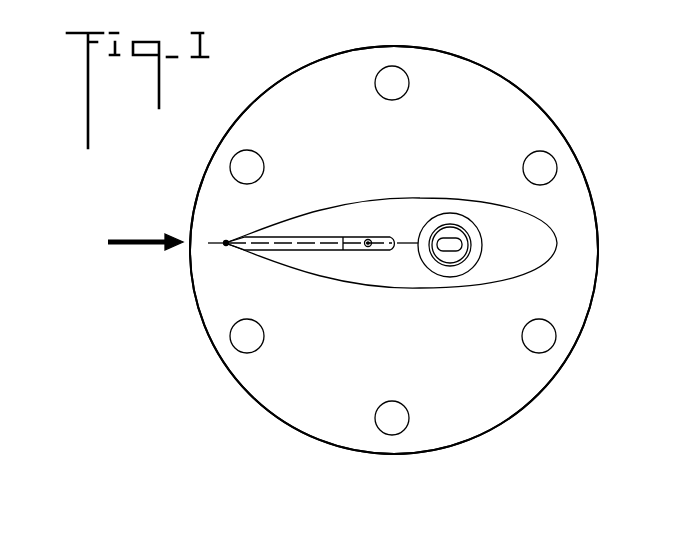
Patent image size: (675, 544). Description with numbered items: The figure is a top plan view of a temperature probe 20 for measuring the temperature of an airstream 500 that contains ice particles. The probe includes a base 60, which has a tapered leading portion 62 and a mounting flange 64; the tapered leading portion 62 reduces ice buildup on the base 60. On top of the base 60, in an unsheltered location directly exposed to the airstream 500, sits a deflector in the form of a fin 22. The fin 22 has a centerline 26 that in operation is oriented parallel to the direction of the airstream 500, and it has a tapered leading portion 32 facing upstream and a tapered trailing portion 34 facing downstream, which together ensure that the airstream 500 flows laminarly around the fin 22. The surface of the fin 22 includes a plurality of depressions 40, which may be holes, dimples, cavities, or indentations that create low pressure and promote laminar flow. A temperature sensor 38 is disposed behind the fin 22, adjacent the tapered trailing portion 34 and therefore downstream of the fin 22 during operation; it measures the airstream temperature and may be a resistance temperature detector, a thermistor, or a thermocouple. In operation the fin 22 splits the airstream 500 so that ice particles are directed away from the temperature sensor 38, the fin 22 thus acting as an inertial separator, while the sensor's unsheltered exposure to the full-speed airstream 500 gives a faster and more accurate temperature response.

The temperature probe 20 is at (548, 78).
The fin 22 is at (322, 229).
The centerline 26 is at (216, 246).
The tapered leading portion 32 is at (278, 248).
The tapered trailing portion 34 is at (358, 250).
The temperature sensor 38 is at (452, 242).
The depressions 40 is at (370, 240).
The base 60 is at (237, 388).
The tapered leading portion 62 is at (265, 232).
The mounting flange 64 is at (311, 412).
The airstream 500 is at (135, 240).